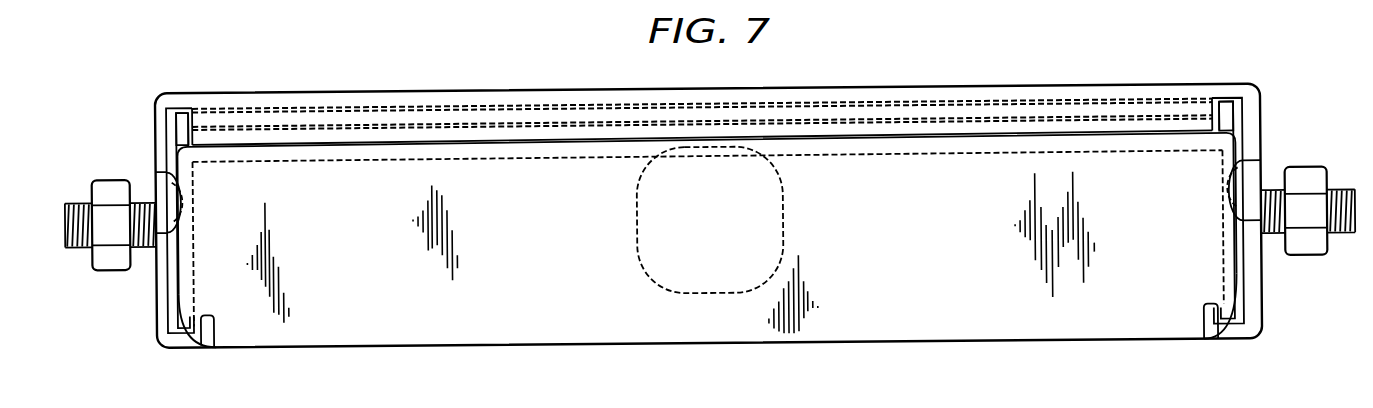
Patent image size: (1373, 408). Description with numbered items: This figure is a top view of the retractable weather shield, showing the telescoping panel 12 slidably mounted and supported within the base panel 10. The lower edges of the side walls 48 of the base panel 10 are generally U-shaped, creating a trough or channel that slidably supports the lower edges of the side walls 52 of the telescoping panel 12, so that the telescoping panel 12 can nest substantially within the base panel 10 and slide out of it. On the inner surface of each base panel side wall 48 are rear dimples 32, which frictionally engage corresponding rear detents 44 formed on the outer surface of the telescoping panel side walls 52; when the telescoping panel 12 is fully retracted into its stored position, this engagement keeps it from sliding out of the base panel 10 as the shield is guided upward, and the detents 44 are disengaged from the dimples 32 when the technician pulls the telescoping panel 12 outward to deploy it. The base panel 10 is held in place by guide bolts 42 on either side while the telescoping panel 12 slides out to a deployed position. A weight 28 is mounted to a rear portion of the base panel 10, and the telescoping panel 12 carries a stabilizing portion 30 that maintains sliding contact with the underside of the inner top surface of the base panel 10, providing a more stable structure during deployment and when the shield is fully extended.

The base panel 10 is at (160, 95).
The telescoping panel 12 is at (300, 150).
The weight 28 is at (765, 226).
The stabilizing portion 30 is at (183, 108).
The rear dimples 32 is at (157, 178).
The guide bolts 42 is at (66, 202).
The rear detents 44 is at (167, 198).
The side walls 48 is at (168, 270).
The side walls 52 is at (183, 288).